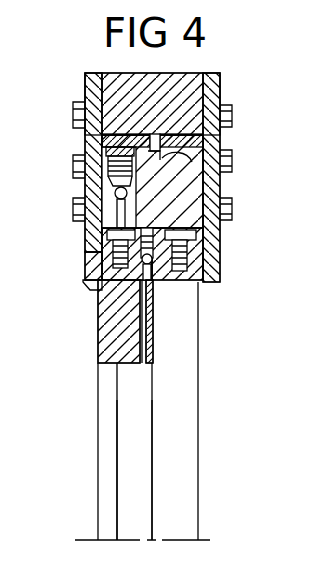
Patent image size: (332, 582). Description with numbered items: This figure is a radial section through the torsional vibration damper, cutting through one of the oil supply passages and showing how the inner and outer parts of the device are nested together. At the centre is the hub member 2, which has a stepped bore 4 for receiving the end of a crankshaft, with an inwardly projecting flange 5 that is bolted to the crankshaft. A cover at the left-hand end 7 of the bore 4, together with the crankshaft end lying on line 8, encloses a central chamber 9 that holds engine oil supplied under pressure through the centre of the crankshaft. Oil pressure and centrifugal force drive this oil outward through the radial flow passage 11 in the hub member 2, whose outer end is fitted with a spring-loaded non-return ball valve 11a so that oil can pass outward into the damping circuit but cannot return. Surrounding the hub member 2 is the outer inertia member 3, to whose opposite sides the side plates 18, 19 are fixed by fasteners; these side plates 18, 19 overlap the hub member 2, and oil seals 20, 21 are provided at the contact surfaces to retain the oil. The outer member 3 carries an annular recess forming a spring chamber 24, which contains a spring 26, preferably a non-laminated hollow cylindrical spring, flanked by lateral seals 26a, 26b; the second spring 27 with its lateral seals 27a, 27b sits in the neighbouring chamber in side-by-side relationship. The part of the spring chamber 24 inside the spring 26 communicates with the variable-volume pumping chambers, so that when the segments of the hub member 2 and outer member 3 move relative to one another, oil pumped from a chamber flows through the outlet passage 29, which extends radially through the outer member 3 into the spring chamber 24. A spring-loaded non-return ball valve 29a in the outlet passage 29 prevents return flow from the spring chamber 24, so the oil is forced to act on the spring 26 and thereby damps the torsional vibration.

The hub member 2 is at (100, 322).
The outer inertia member 3 is at (186, 82).
The stepped bore 4 is at (198, 311).
The inwardly projecting flange 5 is at (100, 362).
The left-hand end 7 is at (108, 452).
The line 8 is at (152, 505).
The central chamber 9 is at (135, 461).
The radial flow passage 11 is at (150, 332).
The spring-loaded non-return ball valve 11a is at (222, 233).
The side plate 18 is at (86, 260).
The side plate 19 is at (222, 245).
The oil seal 20 is at (86, 290).
The oil seal 21 is at (198, 272).
The spring chamber 24 is at (88, 160).
The spring 26 is at (106, 125).
The lateral seal 26a is at (110, 150).
The lateral seal 26b is at (145, 145).
The spring 27 is at (186, 135).
The lateral seal 27a is at (208, 170).
The lateral seal 27b is at (222, 152).
The outlet passage 29 is at (114, 215).
The non-return ball valve 29a is at (86, 181).